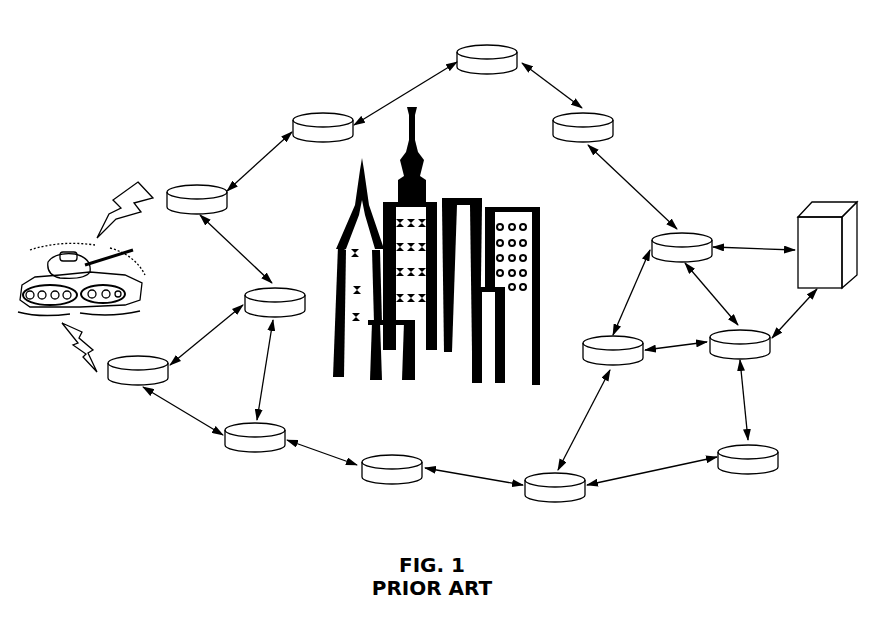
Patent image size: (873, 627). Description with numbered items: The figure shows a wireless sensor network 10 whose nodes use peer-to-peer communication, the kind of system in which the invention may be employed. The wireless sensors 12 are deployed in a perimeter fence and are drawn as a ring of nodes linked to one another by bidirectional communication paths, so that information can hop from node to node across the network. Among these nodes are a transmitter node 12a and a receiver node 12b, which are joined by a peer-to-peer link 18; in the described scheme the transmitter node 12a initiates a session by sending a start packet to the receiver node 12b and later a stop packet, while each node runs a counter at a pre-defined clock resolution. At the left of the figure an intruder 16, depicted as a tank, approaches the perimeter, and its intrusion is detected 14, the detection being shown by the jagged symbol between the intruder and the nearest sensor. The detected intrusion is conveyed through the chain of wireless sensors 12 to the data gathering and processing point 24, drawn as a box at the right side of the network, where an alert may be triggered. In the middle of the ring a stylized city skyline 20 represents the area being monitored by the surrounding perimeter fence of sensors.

The wireless sensor network 10 is at (285, 505).
The wireless sensors 12 is at (490, 50).
The transmitter node 12a is at (180, 185).
The receiver node 12b is at (300, 115).
The detection 14 is at (120, 202).
The intruder 16 is at (60, 254).
The communication link 18 is at (255, 167).
The city / urban area 20 is at (333, 245).
The data gathering and processing point 24 is at (805, 215).